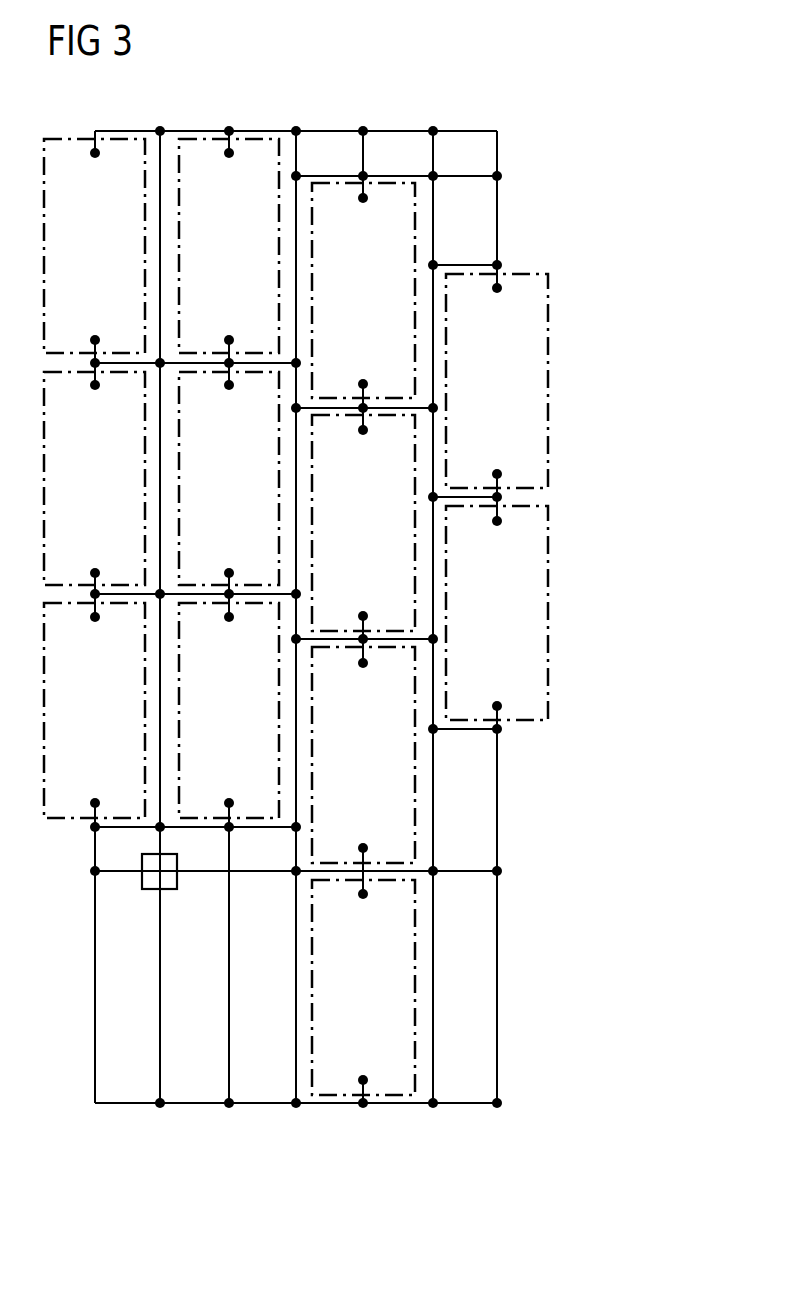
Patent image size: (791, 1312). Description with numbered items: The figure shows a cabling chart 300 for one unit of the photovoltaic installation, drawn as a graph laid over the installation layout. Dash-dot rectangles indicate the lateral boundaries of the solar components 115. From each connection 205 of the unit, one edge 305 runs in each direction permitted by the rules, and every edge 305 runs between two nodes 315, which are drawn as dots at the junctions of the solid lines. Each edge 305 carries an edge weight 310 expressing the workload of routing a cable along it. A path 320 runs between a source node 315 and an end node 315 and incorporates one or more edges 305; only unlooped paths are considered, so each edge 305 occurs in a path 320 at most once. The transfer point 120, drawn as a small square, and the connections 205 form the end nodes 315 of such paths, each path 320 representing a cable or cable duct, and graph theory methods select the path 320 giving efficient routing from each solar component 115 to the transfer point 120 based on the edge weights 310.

The cabling chart 300 is at (567, 128).
The solar component 115 is at (548, 370).
The connection 205 is at (502, 474).
The edge 305 is at (497, 763).
The edge weight 310 is at (497, 937).
The node 315 is at (505, 871).
The transfer point 120 is at (148, 890).
The path 320 is at (296, 1113).